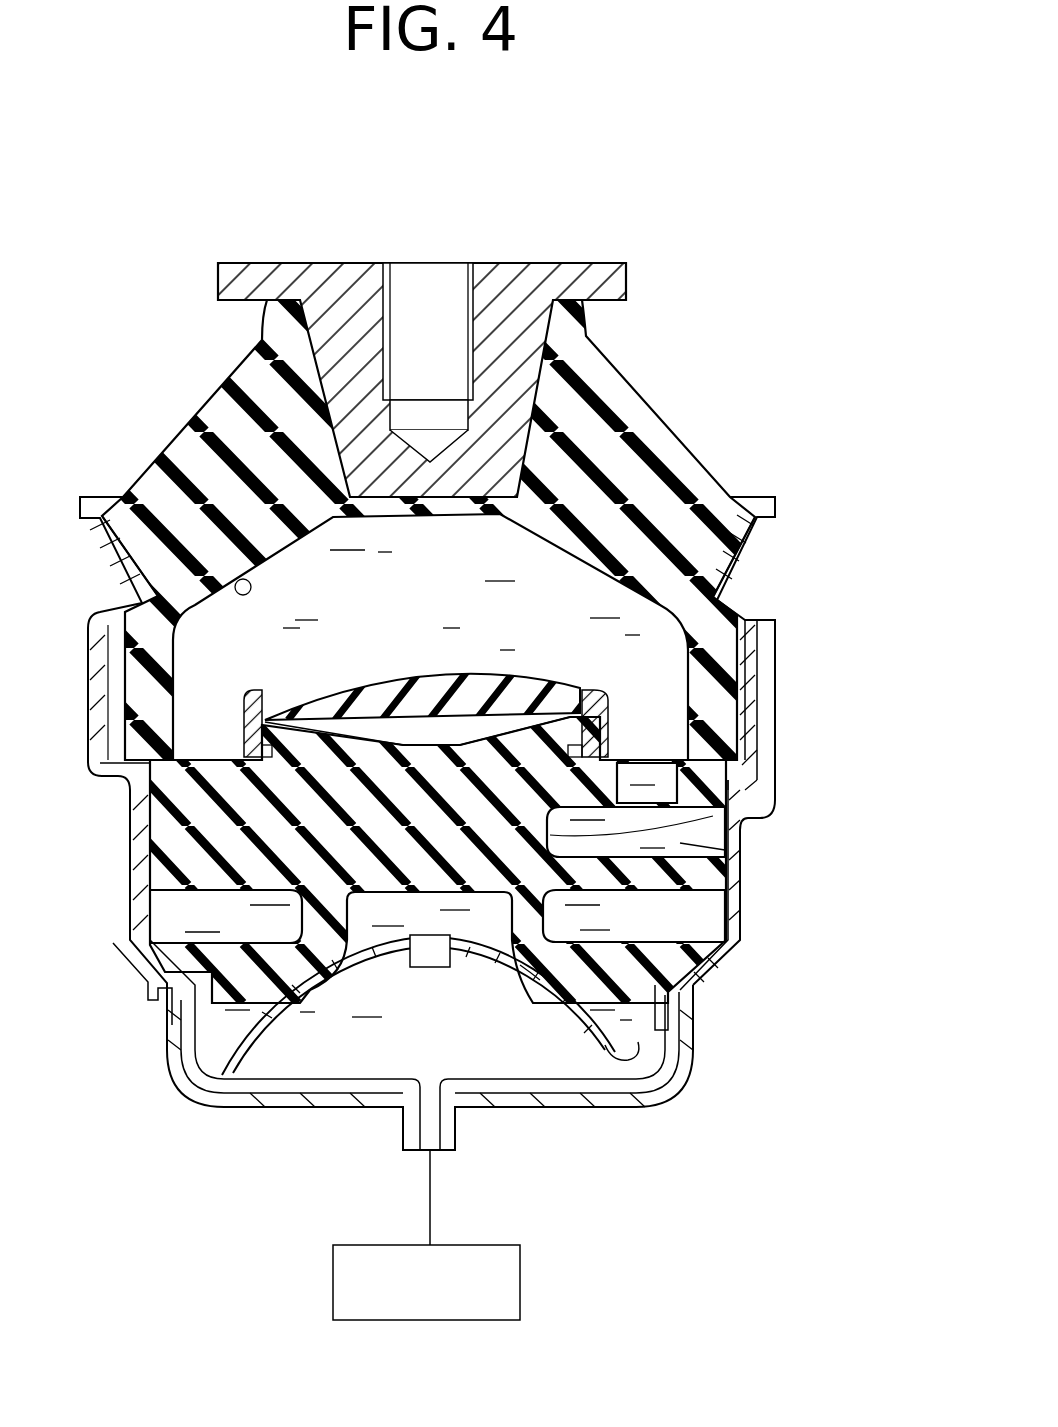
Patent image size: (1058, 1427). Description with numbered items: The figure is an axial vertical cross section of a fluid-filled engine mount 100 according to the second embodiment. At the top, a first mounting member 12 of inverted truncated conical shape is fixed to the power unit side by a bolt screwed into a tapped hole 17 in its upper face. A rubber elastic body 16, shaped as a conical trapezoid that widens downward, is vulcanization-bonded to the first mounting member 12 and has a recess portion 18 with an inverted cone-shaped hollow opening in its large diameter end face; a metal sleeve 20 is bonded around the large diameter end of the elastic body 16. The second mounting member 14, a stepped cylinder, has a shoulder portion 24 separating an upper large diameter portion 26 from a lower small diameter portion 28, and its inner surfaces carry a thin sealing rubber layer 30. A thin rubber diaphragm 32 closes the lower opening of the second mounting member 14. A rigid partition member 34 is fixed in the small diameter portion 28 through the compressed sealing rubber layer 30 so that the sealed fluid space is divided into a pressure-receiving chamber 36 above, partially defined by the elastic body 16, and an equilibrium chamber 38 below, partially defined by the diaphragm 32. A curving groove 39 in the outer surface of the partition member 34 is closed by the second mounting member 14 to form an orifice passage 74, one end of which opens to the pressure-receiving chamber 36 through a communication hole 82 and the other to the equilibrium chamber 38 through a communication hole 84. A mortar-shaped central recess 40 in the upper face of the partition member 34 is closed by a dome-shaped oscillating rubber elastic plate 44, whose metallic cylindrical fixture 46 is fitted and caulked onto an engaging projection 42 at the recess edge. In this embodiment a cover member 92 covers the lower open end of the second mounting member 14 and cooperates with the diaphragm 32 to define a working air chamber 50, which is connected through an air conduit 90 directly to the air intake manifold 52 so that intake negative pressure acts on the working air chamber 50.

The engine mount 100 is at (796, 228).
The first mounting member 12 is at (585, 272).
The second mounting member 14 is at (820, 668).
The rubber elastic body 16 is at (652, 435).
The tapped hole 17 is at (456, 300).
The recess portion 18 is at (240, 580).
The metal sleeve 20 is at (737, 558).
The shoulder portion 24 is at (765, 795).
The large diameter portion 26 is at (777, 645).
The small diameter portion 28 is at (752, 912).
The sealing rubber layer 30 is at (763, 700).
The diaphragm 32 is at (540, 988).
The partition member 34 is at (203, 735).
The pressure-receiving chamber 36 is at (461, 600).
The equilibrium chamber 38 is at (438, 860).
The groove 39 is at (720, 820).
The central recess 40 is at (518, 725).
The engaging projection 42 is at (606, 705).
The oscillating rubber elastic plate 44 is at (378, 690).
The cylindrical fixture 46 is at (242, 710).
The working air chamber 50 is at (428, 1004).
The air intake manifold 52 is at (500, 1245).
The orifice passage 74 is at (725, 850).
The communication hole 82 is at (660, 788).
The communication hole 84 is at (522, 935).
The air conduit 90 is at (430, 1193).
The cover member 92 is at (630, 1103).